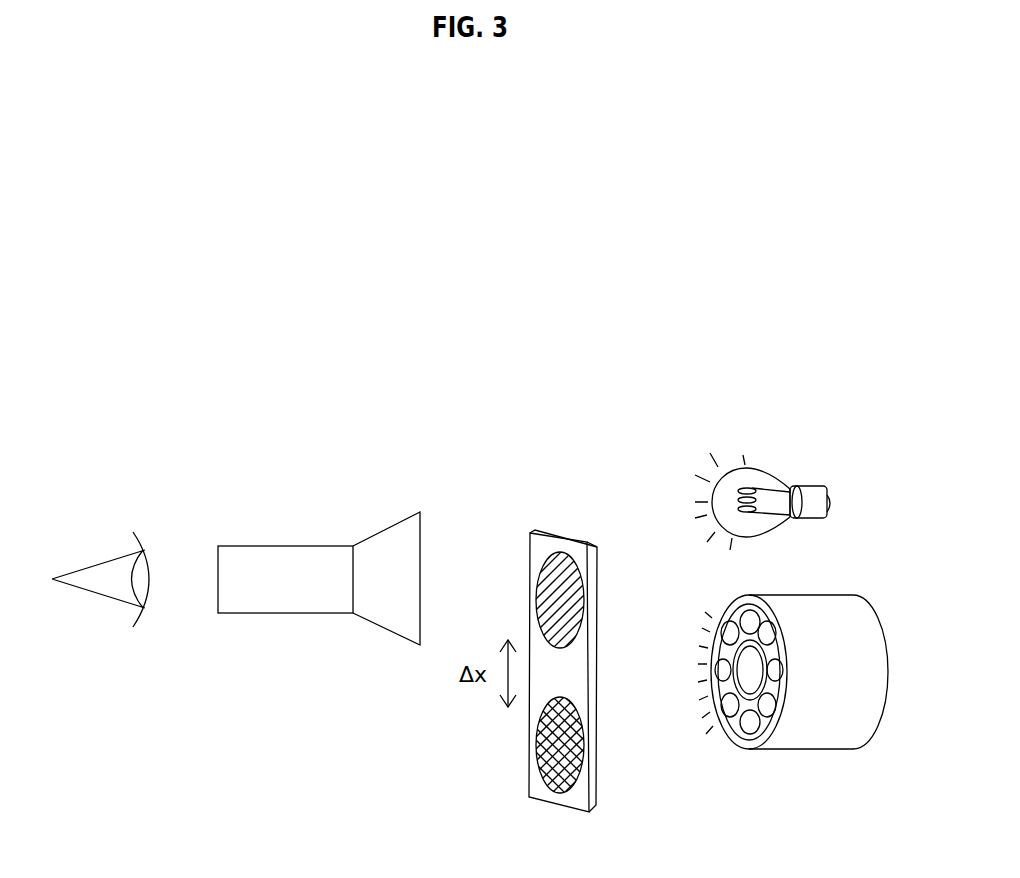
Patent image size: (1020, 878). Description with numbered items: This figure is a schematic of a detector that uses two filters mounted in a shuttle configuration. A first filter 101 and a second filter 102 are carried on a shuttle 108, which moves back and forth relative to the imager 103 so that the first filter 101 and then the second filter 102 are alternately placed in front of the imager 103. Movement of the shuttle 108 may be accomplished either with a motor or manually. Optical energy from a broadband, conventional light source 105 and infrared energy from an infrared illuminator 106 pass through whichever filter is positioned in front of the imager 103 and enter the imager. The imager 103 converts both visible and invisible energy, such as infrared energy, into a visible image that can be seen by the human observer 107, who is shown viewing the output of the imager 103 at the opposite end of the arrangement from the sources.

The first filter 101 is at (555, 582).
The second filter 102 is at (555, 750).
The imager 103 is at (263, 563).
The broadband light source 105 is at (763, 480).
The infrared illuminator 106 is at (793, 622).
The human observer 107 is at (103, 614).
The shuttle 108 is at (575, 683).